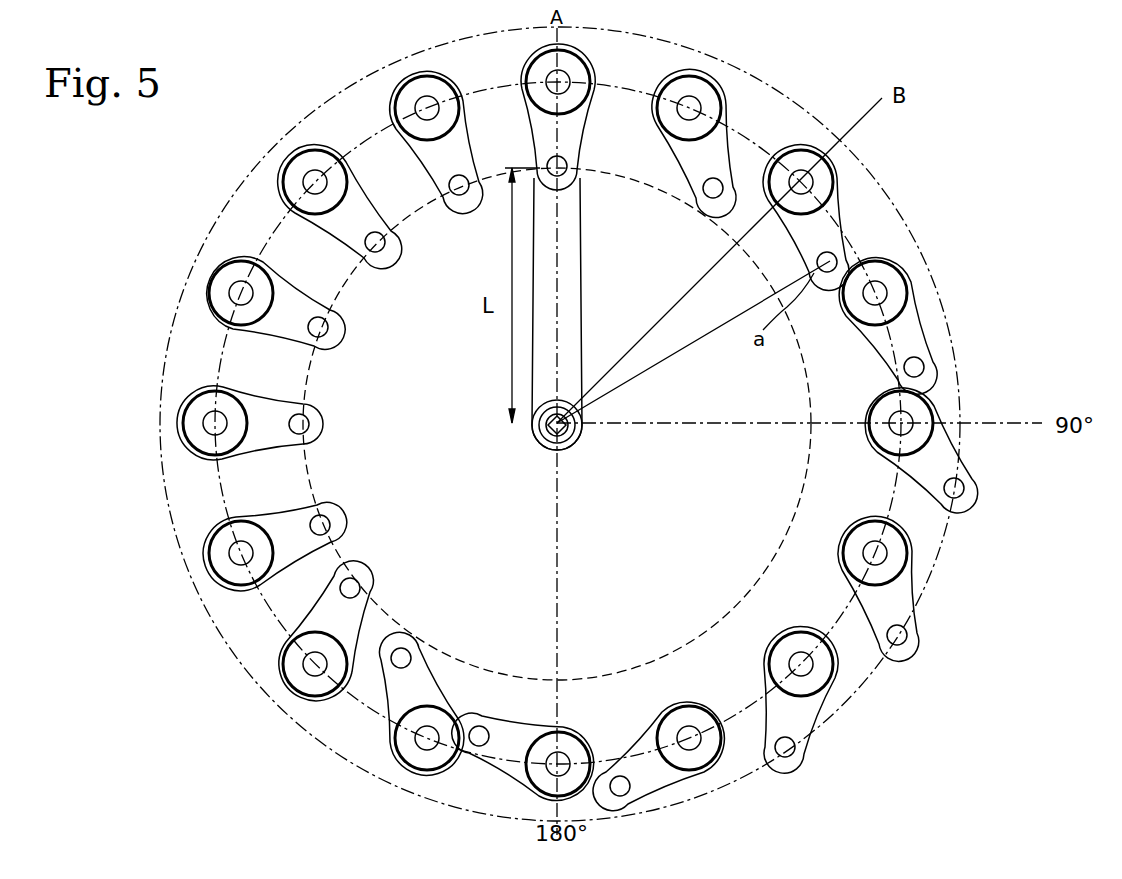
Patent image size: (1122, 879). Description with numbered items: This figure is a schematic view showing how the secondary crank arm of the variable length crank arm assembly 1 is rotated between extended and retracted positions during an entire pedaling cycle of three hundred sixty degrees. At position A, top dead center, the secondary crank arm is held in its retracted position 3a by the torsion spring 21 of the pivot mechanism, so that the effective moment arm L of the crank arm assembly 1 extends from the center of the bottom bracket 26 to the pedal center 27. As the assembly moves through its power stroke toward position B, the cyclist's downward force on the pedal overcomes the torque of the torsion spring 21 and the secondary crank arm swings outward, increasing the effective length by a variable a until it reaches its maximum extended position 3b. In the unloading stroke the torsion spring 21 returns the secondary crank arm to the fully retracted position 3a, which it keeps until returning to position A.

The crank arm assembly 1 is at (558, 117).
The torsion spring 21 is at (567, 79).
The pedal center 27 is at (565, 162).
The bottom bracket 26 is at (545, 447).
The retracted position 3a is at (207, 569).
The extended position 3b is at (918, 406).